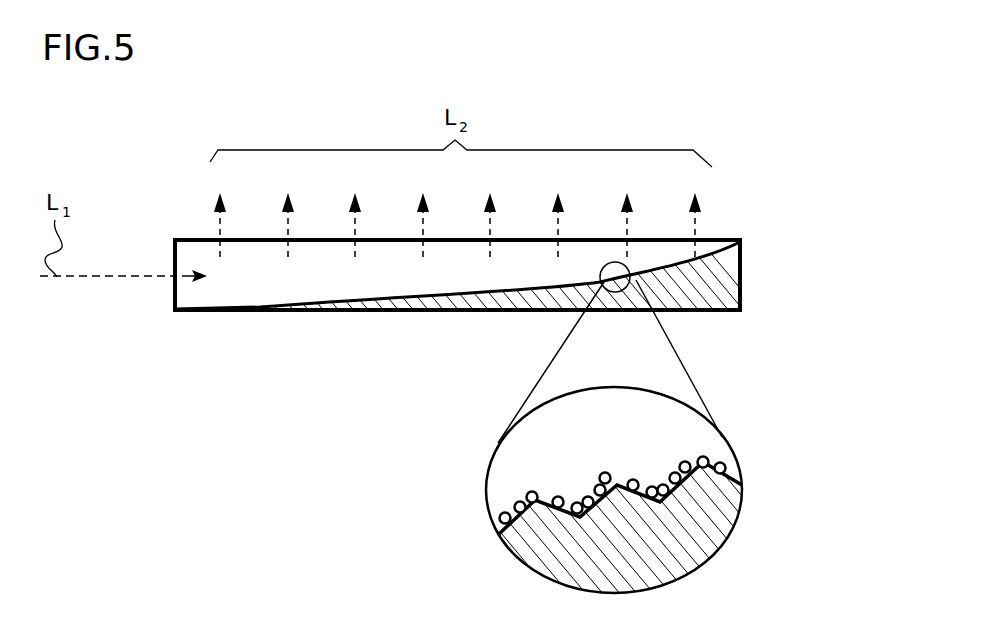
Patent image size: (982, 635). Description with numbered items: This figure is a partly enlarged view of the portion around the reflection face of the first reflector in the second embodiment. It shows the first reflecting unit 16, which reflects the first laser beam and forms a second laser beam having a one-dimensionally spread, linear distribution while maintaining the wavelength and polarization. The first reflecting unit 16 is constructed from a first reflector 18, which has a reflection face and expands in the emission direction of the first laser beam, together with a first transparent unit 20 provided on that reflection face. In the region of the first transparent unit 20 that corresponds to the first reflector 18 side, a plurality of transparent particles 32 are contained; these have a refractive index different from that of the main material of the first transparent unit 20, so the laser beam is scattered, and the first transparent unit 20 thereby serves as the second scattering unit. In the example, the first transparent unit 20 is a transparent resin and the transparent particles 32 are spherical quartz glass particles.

The first reflecting unit 16 is at (769, 259).
The first reflector 18 is at (742, 307).
The first transparent unit 20 is at (450, 275).
The transparent particles 32 is at (490, 517).